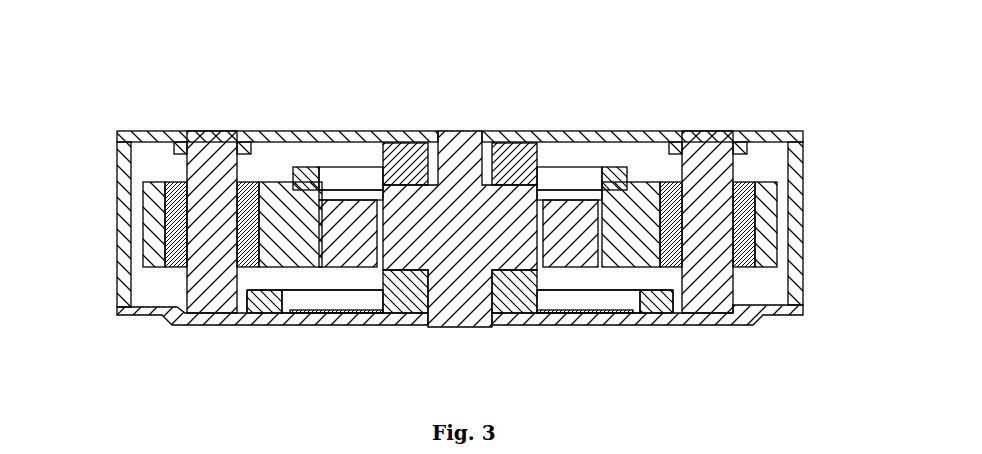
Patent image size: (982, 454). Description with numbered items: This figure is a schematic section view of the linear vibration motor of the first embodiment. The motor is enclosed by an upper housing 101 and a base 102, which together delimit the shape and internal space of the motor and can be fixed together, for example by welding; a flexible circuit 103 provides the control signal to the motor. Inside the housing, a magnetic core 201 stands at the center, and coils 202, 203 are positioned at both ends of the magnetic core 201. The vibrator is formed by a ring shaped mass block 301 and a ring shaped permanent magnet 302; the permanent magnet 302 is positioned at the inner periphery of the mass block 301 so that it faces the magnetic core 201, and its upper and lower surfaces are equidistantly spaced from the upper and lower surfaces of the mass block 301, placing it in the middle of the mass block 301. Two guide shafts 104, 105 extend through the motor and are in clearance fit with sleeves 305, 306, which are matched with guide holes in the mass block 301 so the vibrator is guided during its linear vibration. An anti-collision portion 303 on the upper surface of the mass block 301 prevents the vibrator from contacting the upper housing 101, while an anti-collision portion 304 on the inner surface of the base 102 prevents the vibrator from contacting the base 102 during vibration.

The upper housing 101 is at (122, 215).
The base 102 is at (283, 318).
The flexible circuit 103 is at (355, 313).
The guide shaft 104 is at (213, 183).
The guide shaft 105 is at (705, 210).
The magnetic core 201 is at (443, 220).
The coil 202 is at (517, 175).
The coil 203 is at (512, 290).
The ring shaped mass block 301 is at (277, 225).
The ring shaped permanent magnet 302 is at (567, 225).
The anti-collision portion 303 is at (354, 175).
The anti-collision portion 304 is at (597, 300).
The sleeve 305 is at (168, 246).
The sleeve 306 is at (765, 245).